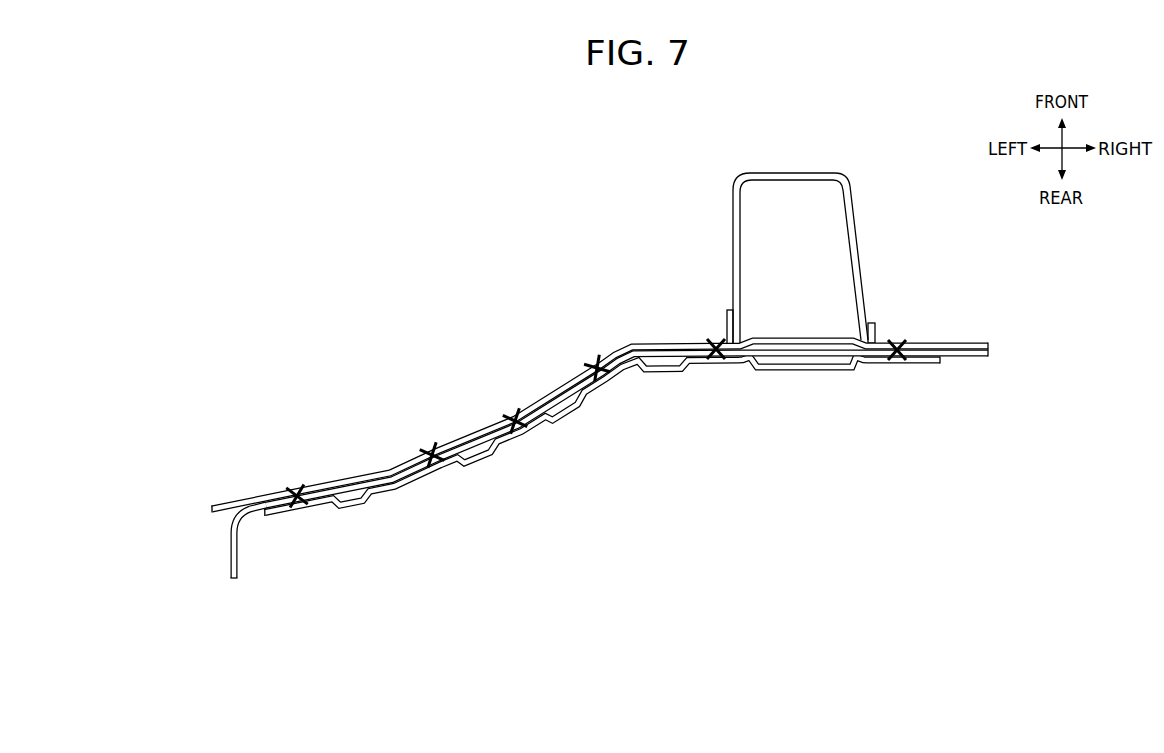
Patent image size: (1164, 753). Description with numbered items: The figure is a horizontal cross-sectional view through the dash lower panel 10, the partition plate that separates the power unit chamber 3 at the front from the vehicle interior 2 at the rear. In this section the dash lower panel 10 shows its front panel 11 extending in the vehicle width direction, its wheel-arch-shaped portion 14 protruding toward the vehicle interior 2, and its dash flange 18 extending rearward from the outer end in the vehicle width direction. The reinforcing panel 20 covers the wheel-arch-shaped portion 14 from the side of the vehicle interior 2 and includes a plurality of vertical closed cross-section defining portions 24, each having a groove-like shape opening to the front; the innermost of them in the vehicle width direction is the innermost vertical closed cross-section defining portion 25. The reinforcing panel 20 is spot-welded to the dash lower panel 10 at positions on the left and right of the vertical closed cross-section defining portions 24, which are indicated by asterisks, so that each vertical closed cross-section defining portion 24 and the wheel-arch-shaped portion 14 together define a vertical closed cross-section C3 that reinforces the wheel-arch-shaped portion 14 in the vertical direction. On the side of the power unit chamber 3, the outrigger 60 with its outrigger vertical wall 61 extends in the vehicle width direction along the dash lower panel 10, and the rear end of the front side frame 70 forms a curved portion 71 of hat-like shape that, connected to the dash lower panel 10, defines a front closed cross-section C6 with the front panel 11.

The vehicle interior 2 is at (633, 492).
The power unit chamber 3 is at (602, 262).
The dash lower panel 10 is at (244, 549).
The front panel 11 is at (768, 336).
The wheel-arch-shaped portion 14 is at (523, 431).
The dash flange 18 is at (228, 565).
The reinforcing panel 20 is at (764, 388).
The vertical closed cross-section defining portion 24 is at (602, 458).
The innermost vertical closed cross-section defining portion 25 is at (374, 504).
The outrigger 60 is at (586, 427).
The outrigger vertical wall 61 is at (222, 492).
The front side frame 70 is at (801, 228).
The curved portion 71 is at (791, 160).
The vertical closed cross-section C3 is at (373, 488).
The front closed cross-section C6 is at (752, 227).